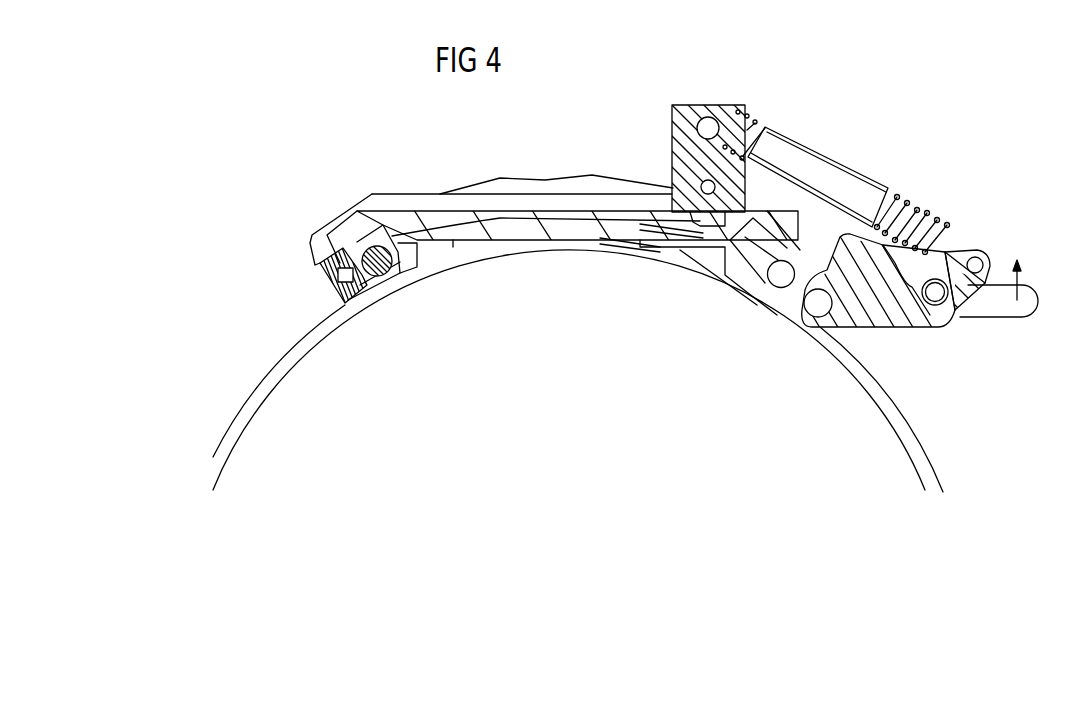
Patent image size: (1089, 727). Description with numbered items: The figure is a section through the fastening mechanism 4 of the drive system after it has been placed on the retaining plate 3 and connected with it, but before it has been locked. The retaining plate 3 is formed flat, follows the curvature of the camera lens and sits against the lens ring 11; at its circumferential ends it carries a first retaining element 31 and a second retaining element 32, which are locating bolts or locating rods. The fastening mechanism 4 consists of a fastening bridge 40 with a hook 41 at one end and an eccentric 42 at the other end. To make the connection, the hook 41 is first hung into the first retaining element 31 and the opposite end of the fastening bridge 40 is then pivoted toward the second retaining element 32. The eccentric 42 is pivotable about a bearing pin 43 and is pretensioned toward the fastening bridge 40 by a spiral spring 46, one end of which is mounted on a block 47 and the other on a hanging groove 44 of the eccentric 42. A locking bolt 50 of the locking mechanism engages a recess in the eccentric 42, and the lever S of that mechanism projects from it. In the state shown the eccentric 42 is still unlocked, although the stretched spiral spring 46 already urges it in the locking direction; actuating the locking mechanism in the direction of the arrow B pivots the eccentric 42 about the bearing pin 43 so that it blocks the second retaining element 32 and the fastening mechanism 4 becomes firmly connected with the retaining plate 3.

The retaining plate 3 is at (568, 243).
The fastening mechanism 4 is at (537, 210).
The lens ring 11 is at (307, 343).
The first retaining element 31 is at (383, 278).
The second retaining element 32 is at (772, 283).
The fastening bridge 40 is at (457, 211).
The hook 41 is at (345, 304).
The eccentric 42 is at (888, 313).
The bearing pin 43 is at (815, 310).
The hanging groove 44 is at (986, 257).
The spiral spring 46 is at (842, 175).
The block 47 is at (687, 115).
The locking bolt 50 is at (936, 299).
The lever S is at (1006, 318).
The arrow B is at (1029, 280).